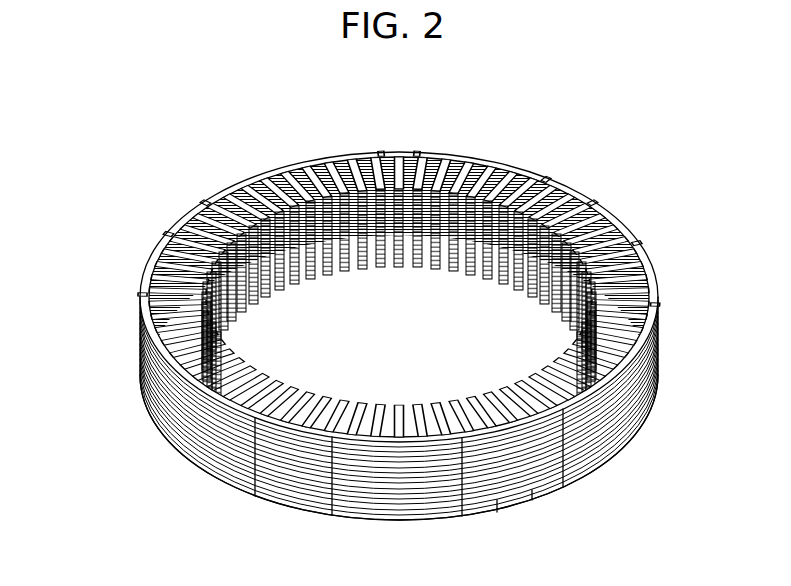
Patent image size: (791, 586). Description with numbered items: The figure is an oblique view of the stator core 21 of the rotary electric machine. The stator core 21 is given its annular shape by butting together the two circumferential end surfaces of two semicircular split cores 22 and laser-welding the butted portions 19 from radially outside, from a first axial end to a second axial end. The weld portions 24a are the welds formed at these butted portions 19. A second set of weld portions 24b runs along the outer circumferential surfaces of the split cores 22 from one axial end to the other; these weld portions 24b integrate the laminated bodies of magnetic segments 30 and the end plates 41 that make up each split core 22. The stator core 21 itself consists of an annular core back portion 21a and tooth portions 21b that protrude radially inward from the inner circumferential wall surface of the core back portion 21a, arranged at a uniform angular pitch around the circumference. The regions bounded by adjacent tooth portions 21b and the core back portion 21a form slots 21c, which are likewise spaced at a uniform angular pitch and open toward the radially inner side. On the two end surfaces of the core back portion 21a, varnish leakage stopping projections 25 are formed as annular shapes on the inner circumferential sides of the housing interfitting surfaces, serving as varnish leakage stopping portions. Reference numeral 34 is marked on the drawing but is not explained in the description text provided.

The butted portions 19 is at (445, 163).
The stator core 21 is at (178, 130).
The core back portion 21a is at (647, 272).
The tooth portions 21b is at (632, 233).
The slots 21c is at (480, 262).
The split cores 22 is at (142, 276).
The weld portions 24a is at (462, 162).
The weld portions 24b is at (378, 153).
The varnish leakage stopping projections 25 is at (212, 207).
The magnetic segments 30 is at (463, 513).
The key projection 34 is at (180, 237).
The end plates 41 is at (497, 510).